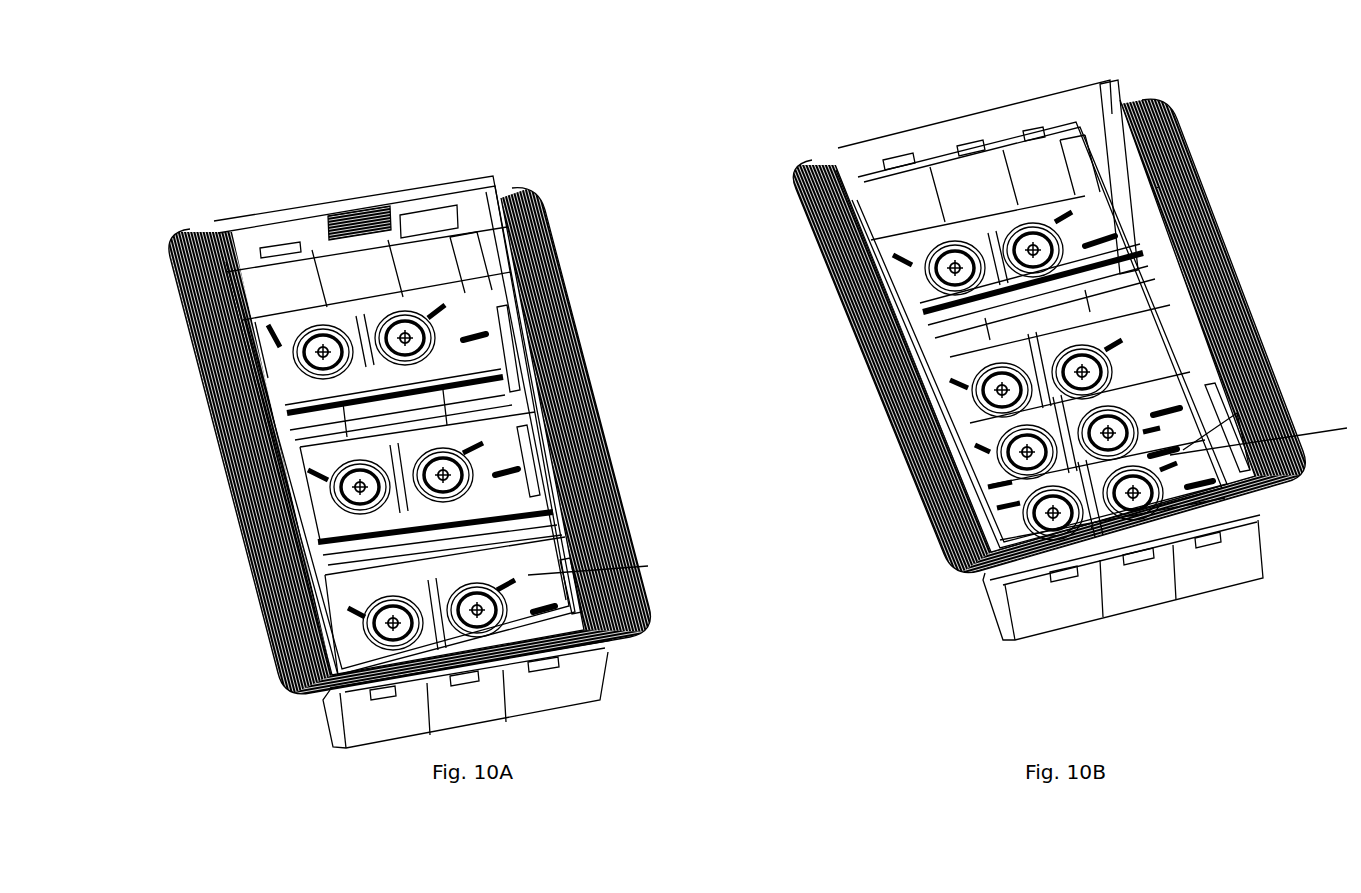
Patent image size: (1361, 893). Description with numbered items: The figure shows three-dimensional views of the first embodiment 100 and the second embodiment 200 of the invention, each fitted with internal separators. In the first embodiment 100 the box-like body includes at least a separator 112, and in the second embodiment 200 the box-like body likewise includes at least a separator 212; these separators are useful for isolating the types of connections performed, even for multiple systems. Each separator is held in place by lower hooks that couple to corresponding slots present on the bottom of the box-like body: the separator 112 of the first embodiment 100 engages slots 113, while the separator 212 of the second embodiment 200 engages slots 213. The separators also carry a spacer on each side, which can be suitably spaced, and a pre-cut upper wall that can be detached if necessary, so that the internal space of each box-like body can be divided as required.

In FIG. 10A, the battery module assembly 100 is at (302, 180).
In FIG. 10A, the separator 112 is at (571, 302).
In FIG. 10A, the slot 113 is at (654, 624).
In FIG. 10B, the battery module assembly 200 is at (802, 119).
In FIG. 10B, the separator 212 is at (855, 340).
In FIG. 10B, the slot 213 is at (917, 488).